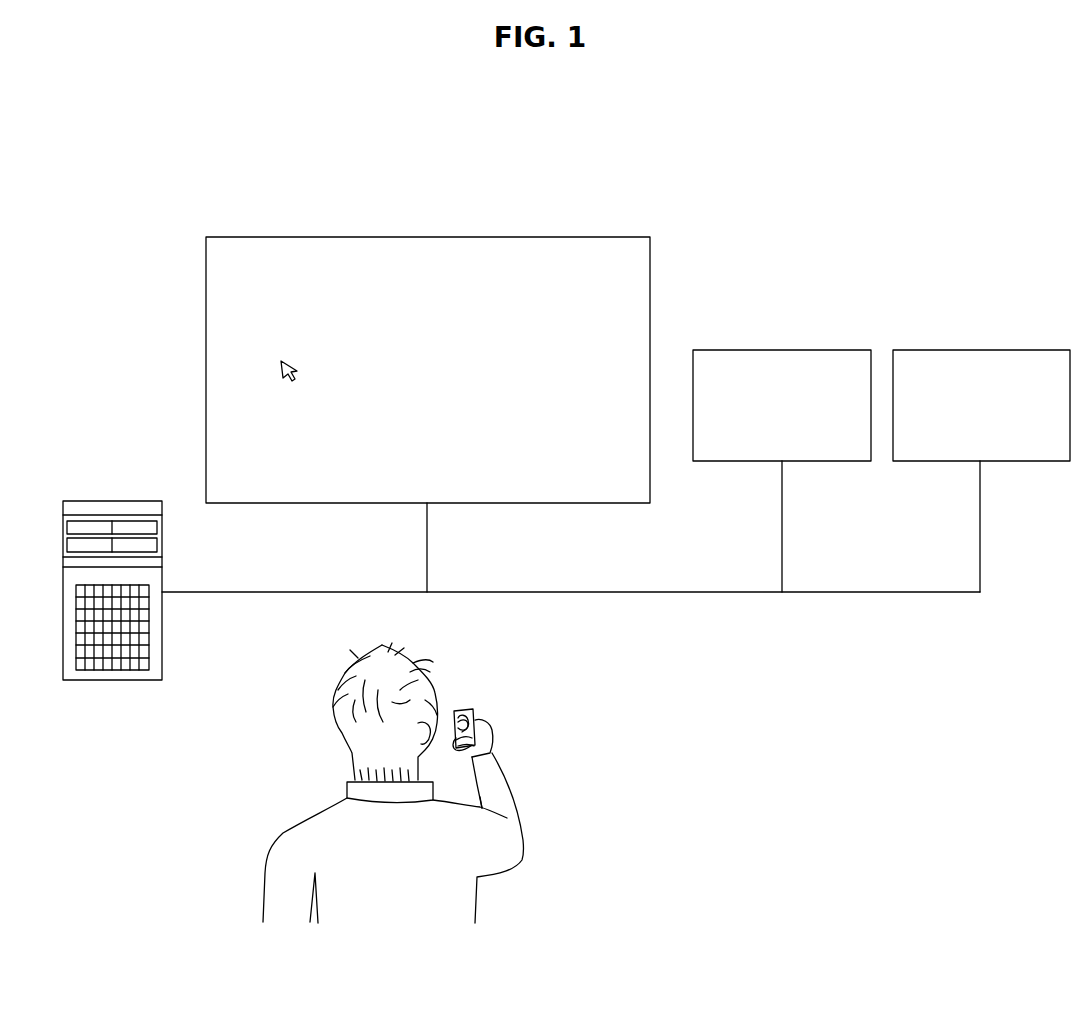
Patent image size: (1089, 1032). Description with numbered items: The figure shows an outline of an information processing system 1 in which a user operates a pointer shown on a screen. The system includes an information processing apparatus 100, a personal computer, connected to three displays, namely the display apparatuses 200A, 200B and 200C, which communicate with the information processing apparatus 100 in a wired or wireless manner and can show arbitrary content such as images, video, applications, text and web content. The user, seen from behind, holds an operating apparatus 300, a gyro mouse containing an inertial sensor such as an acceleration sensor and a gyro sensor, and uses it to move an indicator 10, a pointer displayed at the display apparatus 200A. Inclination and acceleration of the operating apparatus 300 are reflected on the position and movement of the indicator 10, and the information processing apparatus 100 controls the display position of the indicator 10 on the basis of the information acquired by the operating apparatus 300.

The information processing system 1 is at (1046, 192).
The indicator 10 is at (279, 367).
The information processing apparatus 100 is at (109, 501).
The display apparatus 200A is at (426, 237).
The display apparatus 200B is at (782, 350).
The display apparatus 200C is at (981, 350).
The operating apparatus 300 is at (477, 712).